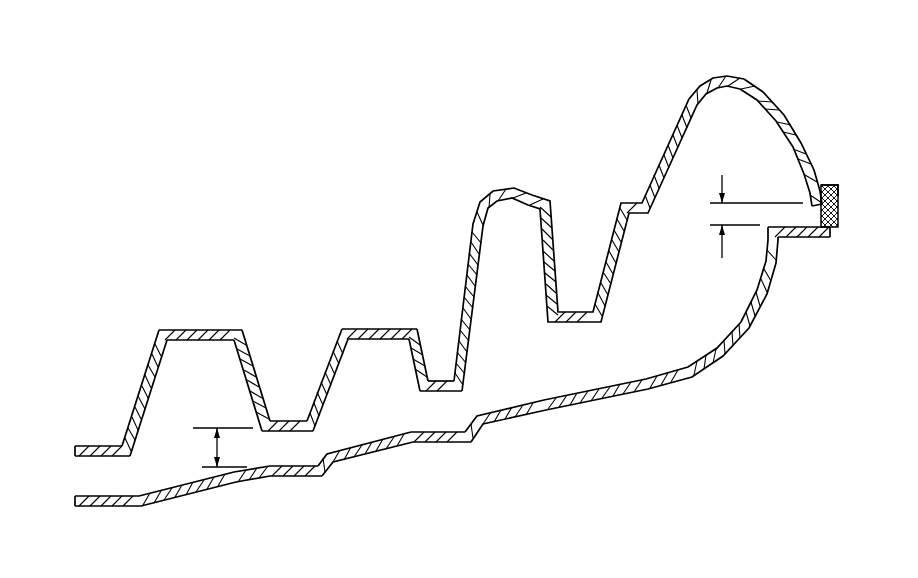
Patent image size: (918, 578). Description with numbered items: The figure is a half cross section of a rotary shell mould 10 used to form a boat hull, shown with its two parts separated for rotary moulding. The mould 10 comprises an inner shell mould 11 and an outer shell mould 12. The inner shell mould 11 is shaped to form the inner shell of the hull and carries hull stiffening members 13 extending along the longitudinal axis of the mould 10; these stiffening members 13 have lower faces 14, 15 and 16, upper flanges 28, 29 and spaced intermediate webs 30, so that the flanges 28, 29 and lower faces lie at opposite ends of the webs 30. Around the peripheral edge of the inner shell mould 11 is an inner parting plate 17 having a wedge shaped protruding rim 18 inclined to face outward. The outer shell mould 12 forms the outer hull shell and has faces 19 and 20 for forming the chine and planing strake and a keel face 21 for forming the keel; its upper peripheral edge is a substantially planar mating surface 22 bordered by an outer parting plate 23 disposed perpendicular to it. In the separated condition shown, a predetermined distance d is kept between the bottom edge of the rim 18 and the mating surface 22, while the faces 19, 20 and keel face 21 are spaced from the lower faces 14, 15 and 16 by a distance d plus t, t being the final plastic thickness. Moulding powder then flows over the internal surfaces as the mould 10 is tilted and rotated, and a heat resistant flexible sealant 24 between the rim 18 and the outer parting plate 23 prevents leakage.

The rotary shell mould 10 is at (790, 60).
The inner shell mould 11 is at (670, 148).
The outer shell mould 12 is at (573, 407).
The hull stiffening members 13 is at (327, 312).
The lower face 14 is at (446, 393).
The lower face 15 is at (330, 465).
The lower face 16 is at (117, 460).
The inner parting plate 17 is at (810, 178).
The wedge shaped rim 18 is at (836, 212).
The face for forming the chine 19 is at (413, 433).
The face for forming the planing strake 20 is at (270, 471).
The keel face 21 is at (80, 495).
The mating surface 22 is at (807, 220).
The outer parting plate 23 is at (837, 232).
The heat resistant flexible sealant 24 is at (824, 183).
The upper flange 28 is at (383, 328).
The upper flange 29 is at (197, 333).
The intermediate webs 30 is at (143, 372).